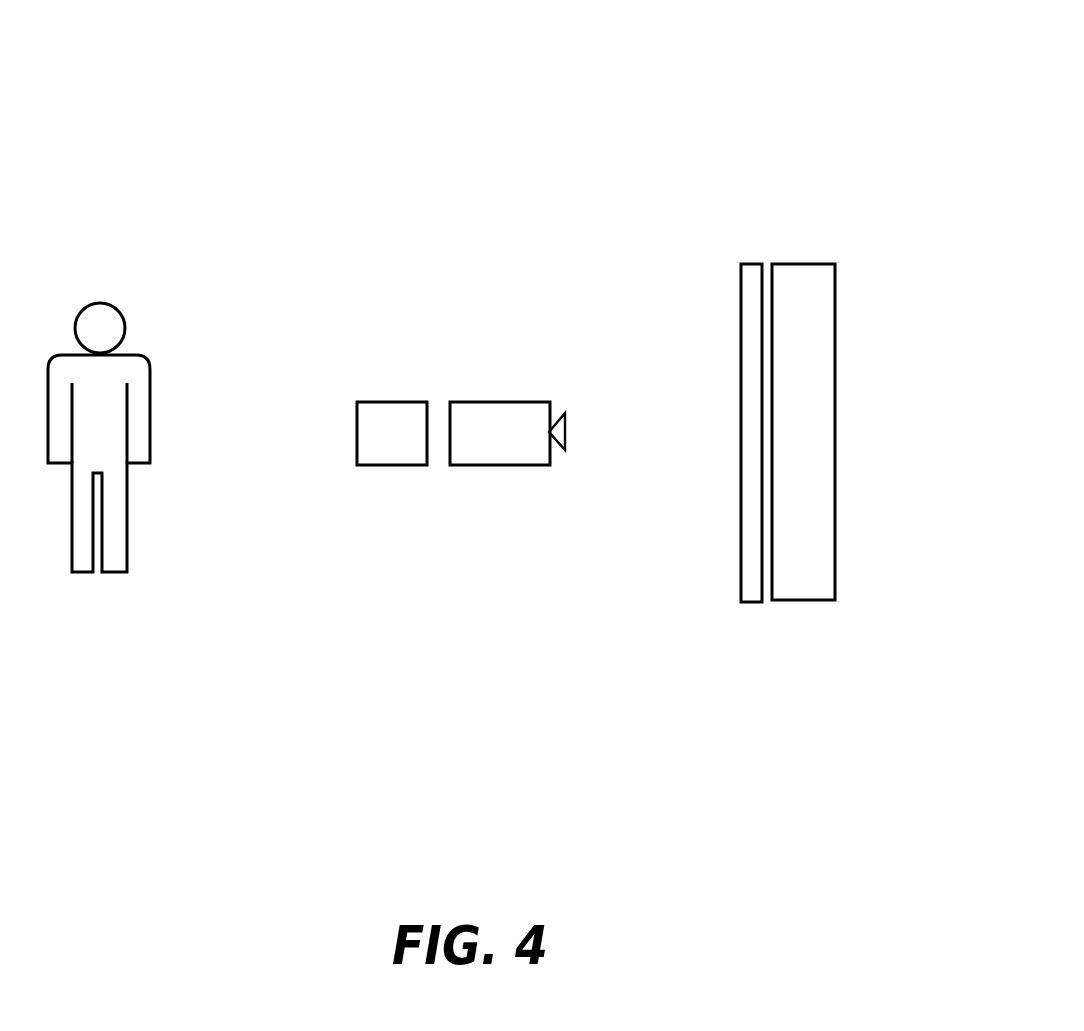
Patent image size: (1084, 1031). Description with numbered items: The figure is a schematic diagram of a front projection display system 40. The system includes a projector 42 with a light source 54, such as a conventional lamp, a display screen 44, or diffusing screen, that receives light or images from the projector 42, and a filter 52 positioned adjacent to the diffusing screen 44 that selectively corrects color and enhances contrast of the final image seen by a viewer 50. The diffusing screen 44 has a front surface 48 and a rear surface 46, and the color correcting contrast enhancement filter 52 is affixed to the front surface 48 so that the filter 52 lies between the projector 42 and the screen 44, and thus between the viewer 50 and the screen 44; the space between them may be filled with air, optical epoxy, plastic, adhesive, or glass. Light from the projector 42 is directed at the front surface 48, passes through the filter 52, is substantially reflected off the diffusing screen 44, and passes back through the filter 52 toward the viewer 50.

The front projection display system 40 is at (772, 89).
The projector 42 is at (493, 400).
The display screen 44 is at (823, 603).
The rear surface 46 is at (835, 350).
The front surface 48 is at (768, 587).
The viewer 50 is at (100, 586).
The filter 52 is at (750, 262).
The light source 54 is at (372, 466).